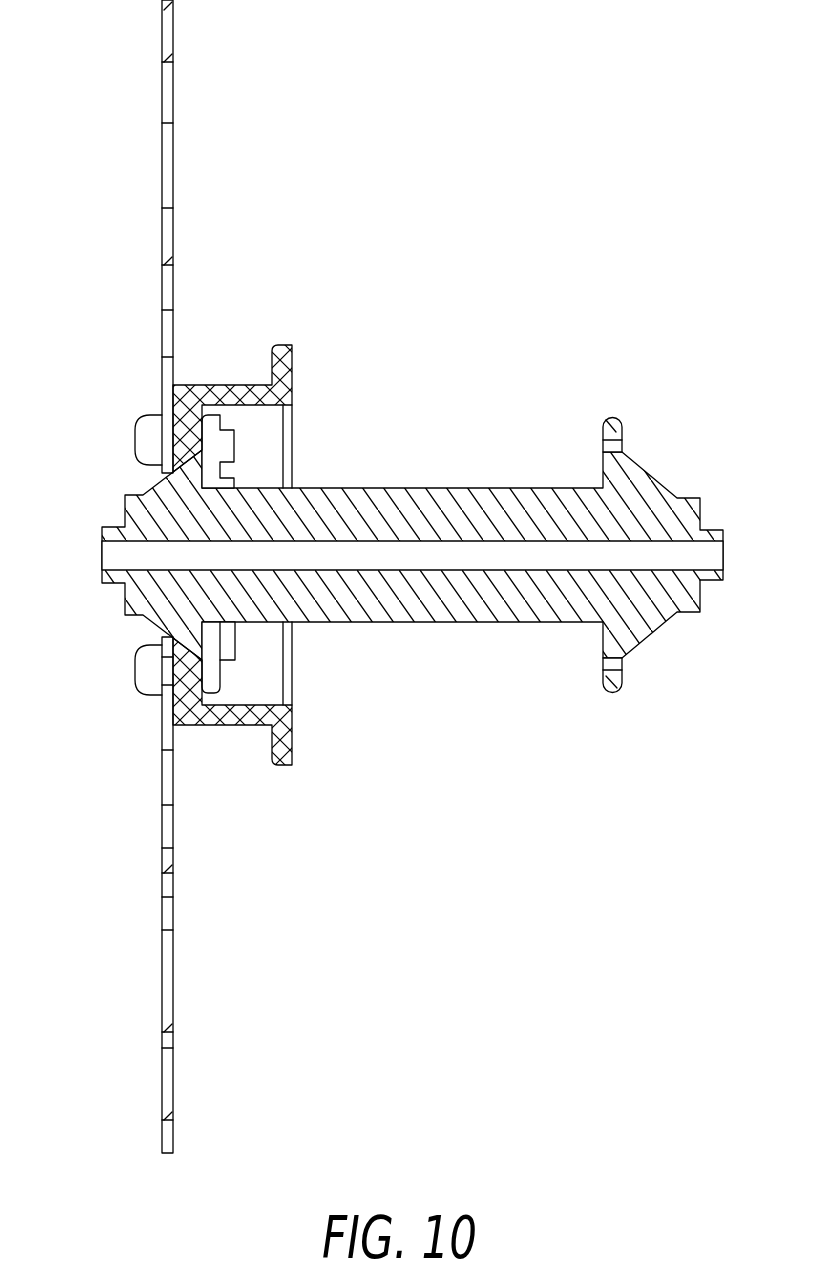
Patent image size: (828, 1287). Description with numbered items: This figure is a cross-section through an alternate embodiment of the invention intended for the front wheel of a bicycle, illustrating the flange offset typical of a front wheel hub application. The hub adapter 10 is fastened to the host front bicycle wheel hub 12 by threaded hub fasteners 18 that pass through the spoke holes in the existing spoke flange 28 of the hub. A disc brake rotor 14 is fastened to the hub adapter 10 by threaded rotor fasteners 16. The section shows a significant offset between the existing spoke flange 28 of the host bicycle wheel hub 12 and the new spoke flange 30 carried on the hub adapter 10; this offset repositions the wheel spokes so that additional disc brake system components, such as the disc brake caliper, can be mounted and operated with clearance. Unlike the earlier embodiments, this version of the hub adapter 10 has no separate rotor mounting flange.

The hub adapter 10 is at (287, 340).
The front bicycle wheel hub 12 is at (473, 486).
The disc brake rotor 14 is at (180, 205).
The threaded rotor fasteners 16 is at (128, 678).
The threaded hub fasteners 18 is at (246, 441).
The existing spoke flange 28 is at (231, 673).
The new spoke flange 30 is at (266, 760).